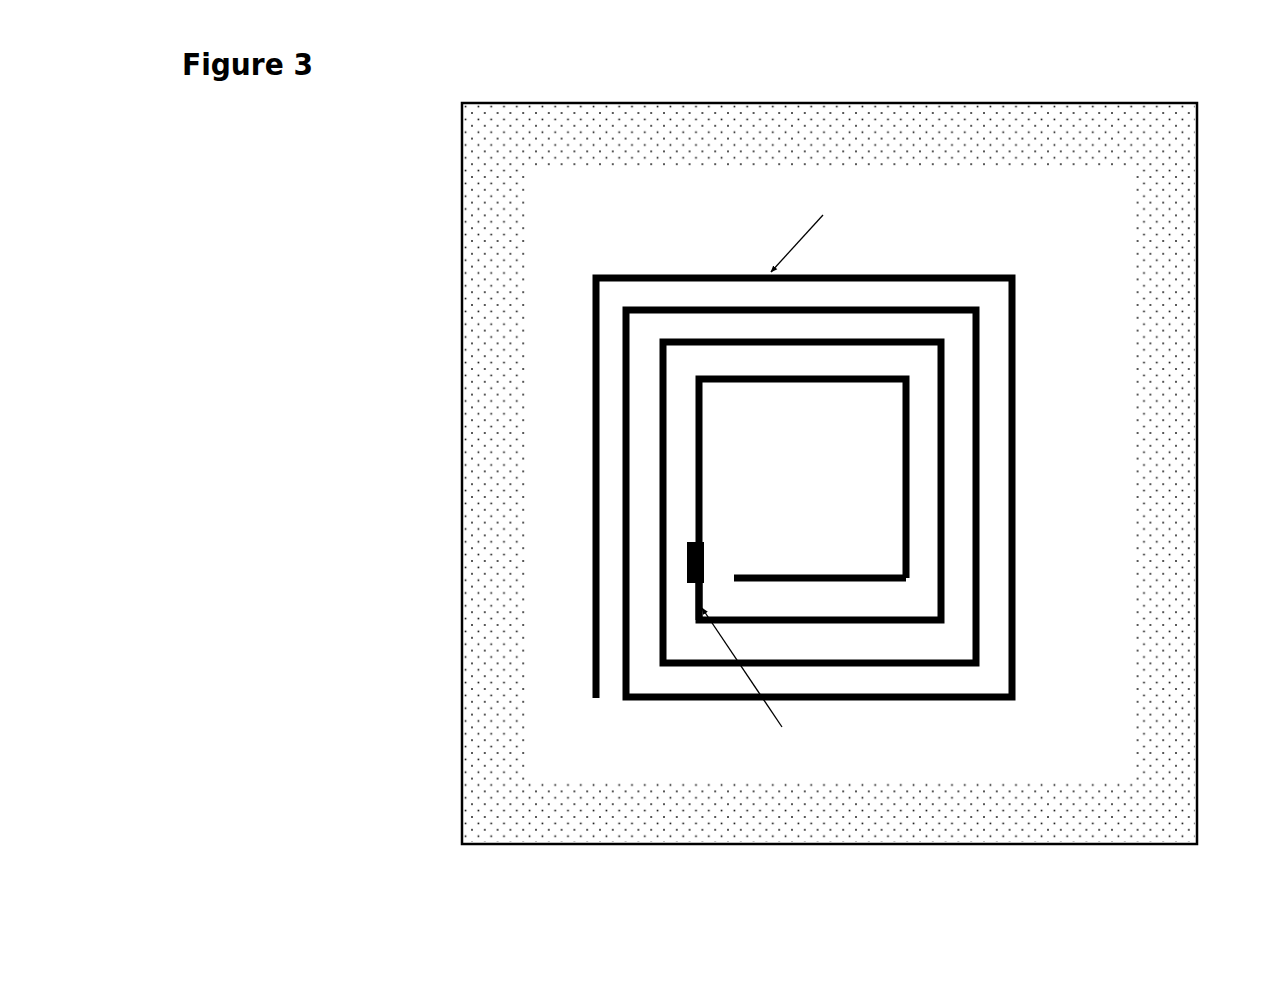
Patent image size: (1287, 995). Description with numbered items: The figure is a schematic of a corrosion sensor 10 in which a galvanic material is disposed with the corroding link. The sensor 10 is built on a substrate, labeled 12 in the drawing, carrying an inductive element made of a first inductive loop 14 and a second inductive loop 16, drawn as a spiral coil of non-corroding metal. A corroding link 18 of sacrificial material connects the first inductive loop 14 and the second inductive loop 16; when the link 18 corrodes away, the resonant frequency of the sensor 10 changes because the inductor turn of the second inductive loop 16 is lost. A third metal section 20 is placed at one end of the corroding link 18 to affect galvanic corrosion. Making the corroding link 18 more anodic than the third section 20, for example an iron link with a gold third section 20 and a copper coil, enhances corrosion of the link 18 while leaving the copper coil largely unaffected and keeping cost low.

The corrosion sensor 10 is at (384, 132).
The substrate 12 is at (538, 160).
The first inductive loop 14 is at (589, 452).
The second inductive loop 16 is at (911, 567).
The corroding link 18 is at (688, 607).
The third metal section 20 is at (686, 568).